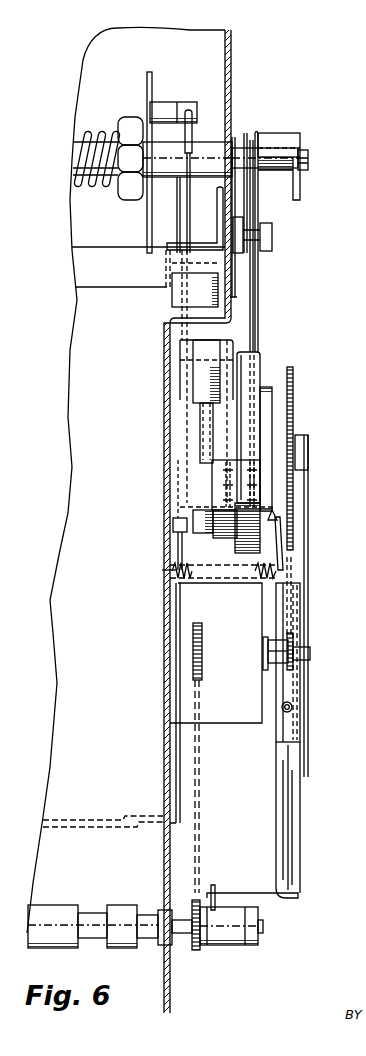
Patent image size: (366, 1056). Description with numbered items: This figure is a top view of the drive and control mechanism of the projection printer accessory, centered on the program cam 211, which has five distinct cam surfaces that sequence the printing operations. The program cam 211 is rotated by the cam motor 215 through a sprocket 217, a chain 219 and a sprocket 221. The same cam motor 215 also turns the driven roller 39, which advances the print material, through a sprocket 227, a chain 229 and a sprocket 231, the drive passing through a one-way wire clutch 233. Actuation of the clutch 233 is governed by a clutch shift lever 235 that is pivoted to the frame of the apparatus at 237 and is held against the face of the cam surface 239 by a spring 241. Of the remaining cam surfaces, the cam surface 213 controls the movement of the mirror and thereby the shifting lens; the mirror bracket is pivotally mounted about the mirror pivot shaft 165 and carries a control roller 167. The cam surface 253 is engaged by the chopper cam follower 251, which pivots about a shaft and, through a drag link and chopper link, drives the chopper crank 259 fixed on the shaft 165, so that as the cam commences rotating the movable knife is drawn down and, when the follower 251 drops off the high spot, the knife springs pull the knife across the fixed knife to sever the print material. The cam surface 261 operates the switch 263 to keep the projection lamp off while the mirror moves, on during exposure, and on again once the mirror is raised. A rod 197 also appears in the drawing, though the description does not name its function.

The driven roller 39 is at (58, 908).
The mirror pivot shaft 165 is at (309, 162).
The control roller 167 is at (187, 101).
The rod 197 is at (180, 215).
The program cam 211 is at (265, 376).
The cam surface 213 is at (213, 538).
The cam motor 215 is at (240, 712).
The sprocket 217 is at (294, 638).
The chain 219 is at (293, 570).
The sprocket 221 is at (294, 405).
The sprocket 227 is at (203, 647).
The chain 229 is at (199, 807).
The sprocket 231 is at (197, 951).
The one-way wire clutch 233 is at (232, 944).
The clutch shift lever 235 is at (292, 836).
The pivot 237 is at (293, 706).
The cam surface 239 is at (272, 431).
The spring 241 is at (225, 573).
The chopper cam follower 251 is at (258, 273).
The cam surface 253 is at (249, 350).
The chopper crank 259 is at (273, 138).
The cam surface 261 is at (203, 485).
The switch 263 is at (197, 383).